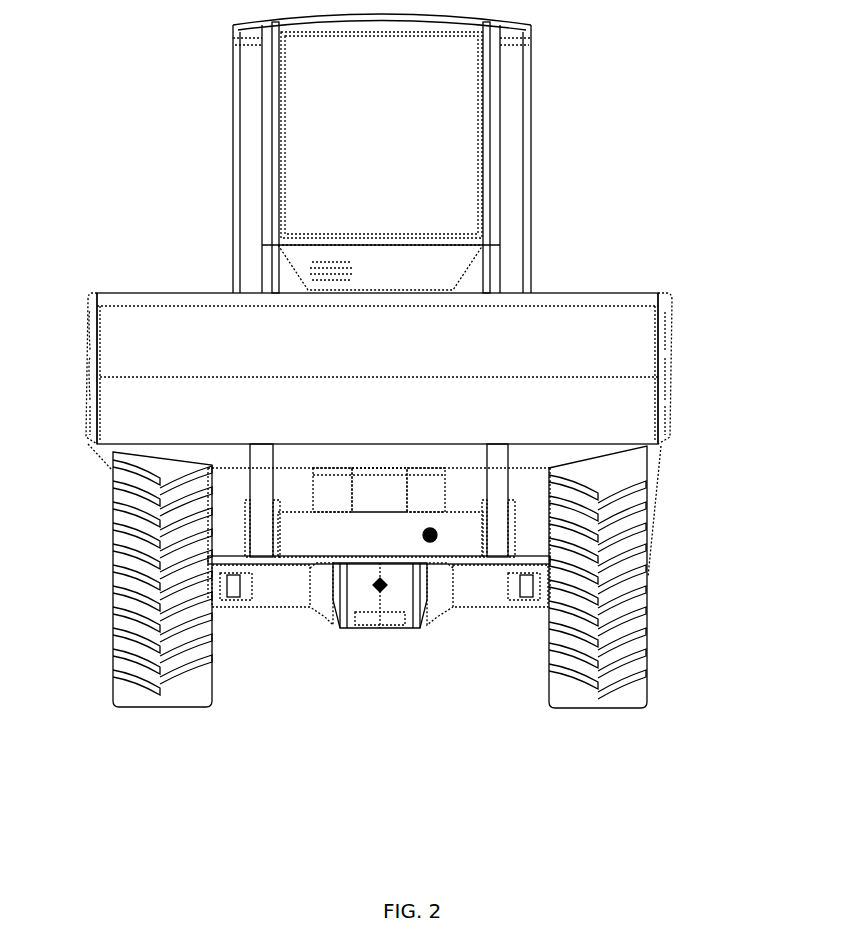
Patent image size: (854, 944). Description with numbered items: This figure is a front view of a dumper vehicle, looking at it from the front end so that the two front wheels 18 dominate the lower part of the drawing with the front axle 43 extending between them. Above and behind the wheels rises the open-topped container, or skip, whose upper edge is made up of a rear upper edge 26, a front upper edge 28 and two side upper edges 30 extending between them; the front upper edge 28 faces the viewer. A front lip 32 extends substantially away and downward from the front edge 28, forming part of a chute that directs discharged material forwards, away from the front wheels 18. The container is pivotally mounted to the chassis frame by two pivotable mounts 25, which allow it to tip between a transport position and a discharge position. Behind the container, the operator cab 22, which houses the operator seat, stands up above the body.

The front wheels 18 is at (127, 658).
The operator cab 22 is at (410, 106).
The pivotable mounts 25 is at (260, 557).
The rear upper edge 26 is at (200, 293).
The front upper edge 28 is at (135, 382).
The side upper edges 30 is at (98, 312).
The front lip 32 is at (605, 402).
The front axle 43 is at (287, 588).